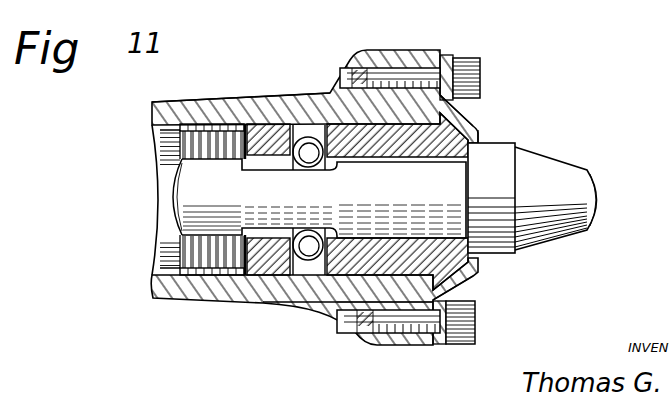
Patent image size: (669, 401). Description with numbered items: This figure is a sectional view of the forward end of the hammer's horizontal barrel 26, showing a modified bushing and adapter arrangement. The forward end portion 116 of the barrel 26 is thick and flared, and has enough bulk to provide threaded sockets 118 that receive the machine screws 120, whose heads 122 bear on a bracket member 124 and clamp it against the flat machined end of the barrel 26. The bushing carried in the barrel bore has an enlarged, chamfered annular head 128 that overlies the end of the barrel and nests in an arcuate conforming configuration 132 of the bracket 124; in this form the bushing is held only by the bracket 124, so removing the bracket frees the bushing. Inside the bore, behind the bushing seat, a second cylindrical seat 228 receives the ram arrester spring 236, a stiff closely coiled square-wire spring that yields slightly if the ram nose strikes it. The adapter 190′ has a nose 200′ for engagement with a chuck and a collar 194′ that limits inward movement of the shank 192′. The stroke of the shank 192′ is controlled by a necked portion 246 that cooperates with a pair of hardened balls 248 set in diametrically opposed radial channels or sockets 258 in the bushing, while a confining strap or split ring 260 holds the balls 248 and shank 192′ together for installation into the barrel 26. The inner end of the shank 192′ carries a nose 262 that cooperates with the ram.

The barrel 26 is at (189, 102).
The forward end portion of the barrel 116 is at (413, 298).
The threaded sockets 118 is at (363, 69).
The machine screws 120 is at (441, 51).
The screw heads 122 is at (480, 72).
The bracket member 124 is at (474, 111).
The annular head 128 is at (477, 131).
The arcuate conforming configuration 132 is at (477, 295).
The adapter 190′ is at (310, 94).
The shank 192′ is at (468, 290).
The collar 194′ is at (513, 253).
The nose 200′ is at (578, 170).
The second cylindrical seat 228 is at (190, 270).
The ram arrester spring 236 is at (178, 272).
The necked portion 246 is at (240, 302).
The hardened balls 248 is at (270, 213).
The channels or sockets 258 is at (340, 310).
The split ring 260 is at (303, 303).
The nose 262 is at (180, 220).